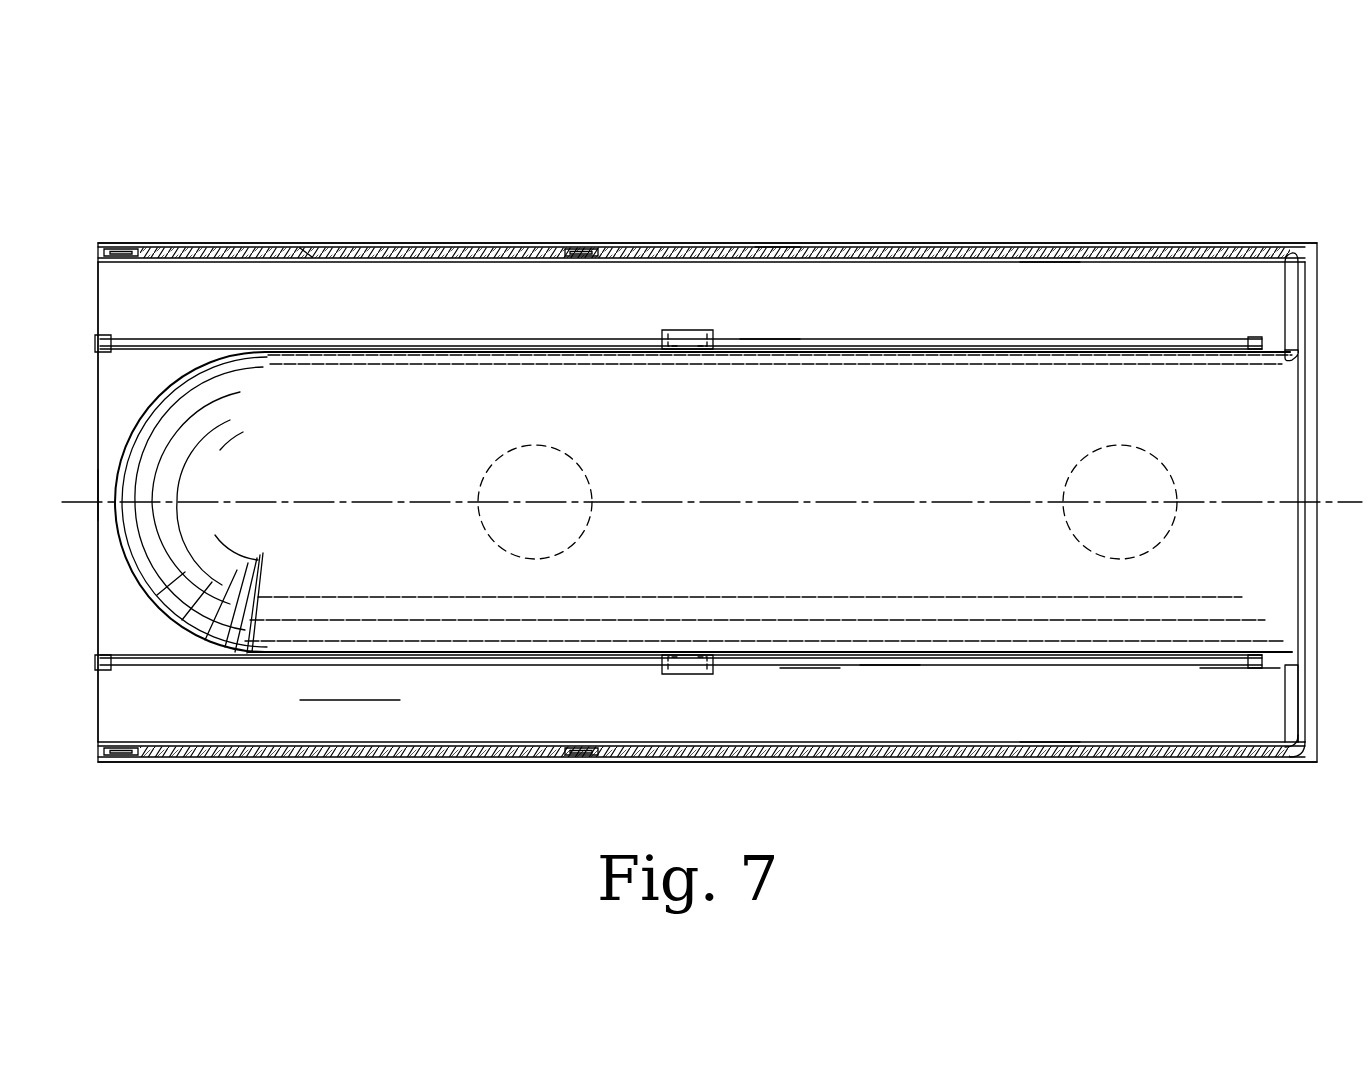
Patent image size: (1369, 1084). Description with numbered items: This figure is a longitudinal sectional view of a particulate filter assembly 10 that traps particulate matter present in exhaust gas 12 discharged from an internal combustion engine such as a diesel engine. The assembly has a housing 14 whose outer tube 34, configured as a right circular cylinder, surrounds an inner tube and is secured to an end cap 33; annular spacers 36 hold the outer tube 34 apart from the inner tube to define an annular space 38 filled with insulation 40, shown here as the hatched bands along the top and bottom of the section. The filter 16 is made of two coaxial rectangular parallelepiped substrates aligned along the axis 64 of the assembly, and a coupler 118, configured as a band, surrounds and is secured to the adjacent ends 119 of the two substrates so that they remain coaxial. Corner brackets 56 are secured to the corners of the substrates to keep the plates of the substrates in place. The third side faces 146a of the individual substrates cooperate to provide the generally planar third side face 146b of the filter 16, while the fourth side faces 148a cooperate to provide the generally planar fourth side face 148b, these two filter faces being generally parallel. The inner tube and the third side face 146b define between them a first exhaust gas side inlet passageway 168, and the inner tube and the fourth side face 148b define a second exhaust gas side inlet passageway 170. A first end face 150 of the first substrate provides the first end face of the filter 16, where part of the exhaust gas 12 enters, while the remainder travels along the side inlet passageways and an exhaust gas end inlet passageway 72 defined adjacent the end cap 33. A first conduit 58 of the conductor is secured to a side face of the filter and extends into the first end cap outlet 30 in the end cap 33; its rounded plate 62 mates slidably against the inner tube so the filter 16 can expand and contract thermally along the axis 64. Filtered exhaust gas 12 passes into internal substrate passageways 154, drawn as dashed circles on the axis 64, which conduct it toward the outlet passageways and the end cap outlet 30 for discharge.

The particulate filter assembly 10 is at (252, 162).
The exhaust gas 12 is at (378, 710).
The housing 14 is at (298, 775).
The filter 16 is at (155, 330).
The end cap outlet 30 is at (1298, 362).
The end cap 33 is at (1290, 308).
The outer tube 34 is at (893, 247).
The annular spacer 36 is at (106, 243).
The annular space 38 is at (310, 257).
The insulation 40 is at (770, 247).
The corner bracket 56 is at (108, 352).
The first conduit 58 is at (218, 420).
The rounded plate 62 is at (335, 375).
The axis 64 is at (742, 500).
The exhaust gas end inlet passageway 72 is at (1290, 668).
The coupler 118 is at (692, 675).
The adjacent ends 119 is at (708, 330).
The third side face 146a is at (532, 322).
The third side face of the filter 146b is at (760, 333).
The fourth side face 148a is at (556, 667).
The fourth side face of the filter 148b is at (882, 668).
The first end face 150 is at (98, 492).
The internal substrate passageway 154 is at (486, 478).
The first exhaust gas side inlet passageway 168 is at (1048, 266).
The second exhaust gas side inlet passageway 170 is at (1048, 745).